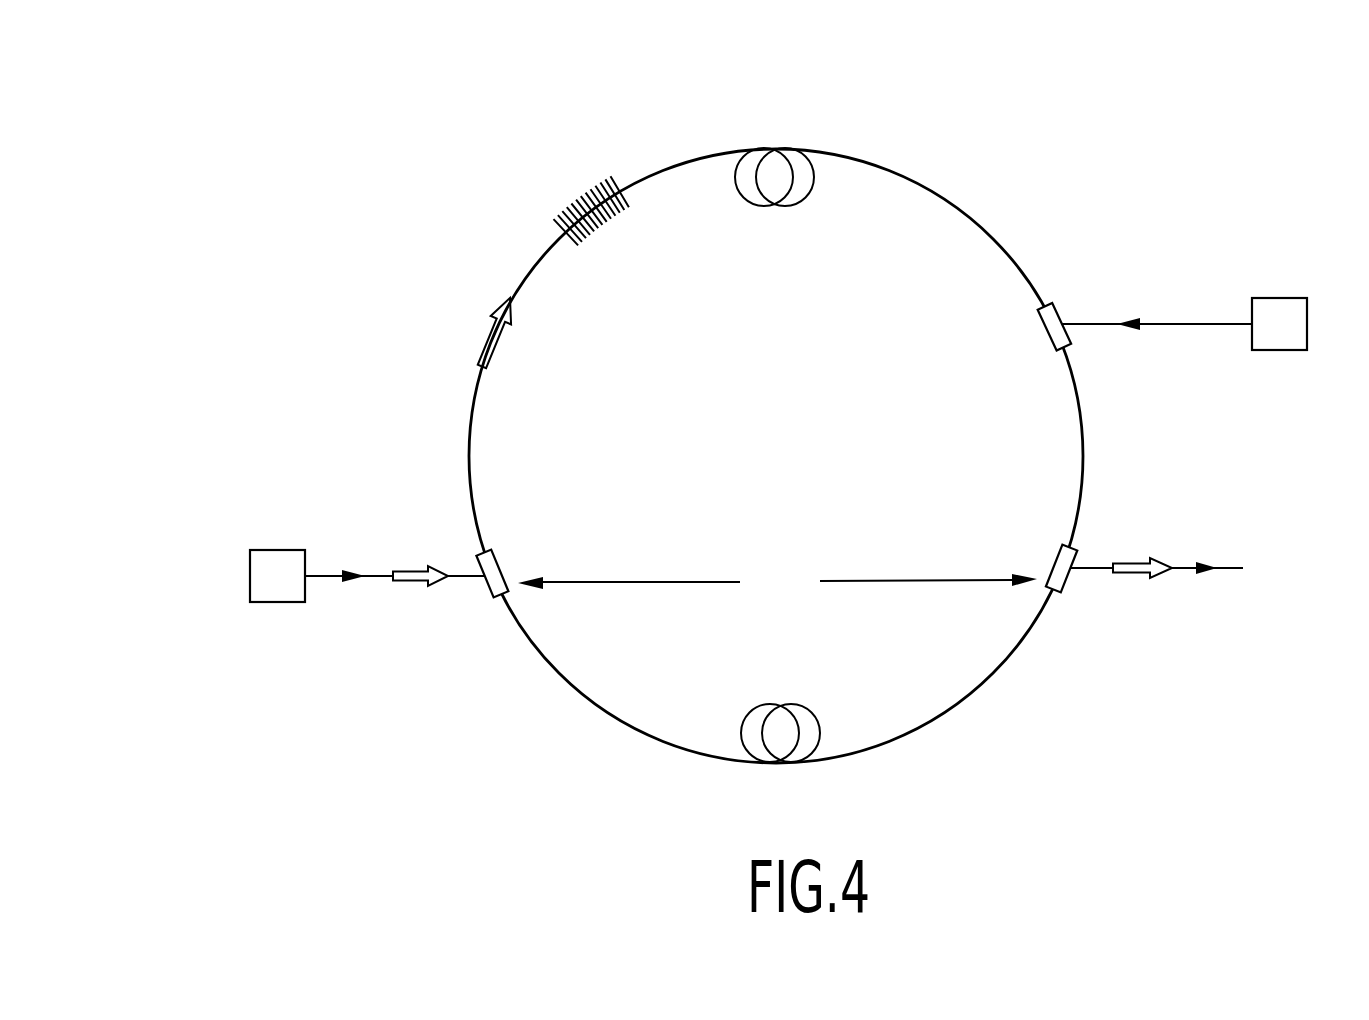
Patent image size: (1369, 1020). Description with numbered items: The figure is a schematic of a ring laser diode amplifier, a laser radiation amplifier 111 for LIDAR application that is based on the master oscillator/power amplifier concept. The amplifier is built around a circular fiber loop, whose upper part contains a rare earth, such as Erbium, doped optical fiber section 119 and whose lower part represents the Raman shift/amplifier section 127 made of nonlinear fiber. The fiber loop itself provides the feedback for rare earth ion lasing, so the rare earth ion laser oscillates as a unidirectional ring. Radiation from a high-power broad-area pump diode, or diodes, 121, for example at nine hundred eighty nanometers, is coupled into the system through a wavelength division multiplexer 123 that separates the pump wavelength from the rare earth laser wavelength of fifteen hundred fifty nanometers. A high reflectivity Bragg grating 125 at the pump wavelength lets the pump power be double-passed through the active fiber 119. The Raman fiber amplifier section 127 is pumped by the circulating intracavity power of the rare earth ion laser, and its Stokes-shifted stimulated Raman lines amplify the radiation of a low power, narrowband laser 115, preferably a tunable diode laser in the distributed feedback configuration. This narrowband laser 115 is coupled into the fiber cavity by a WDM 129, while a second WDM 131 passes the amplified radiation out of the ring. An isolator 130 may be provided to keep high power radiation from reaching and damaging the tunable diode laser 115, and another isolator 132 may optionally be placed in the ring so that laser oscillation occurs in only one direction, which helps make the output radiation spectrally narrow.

The laser radiation amplifier 111 is at (1152, 102).
The narrowband laser 115 is at (285, 602).
The rare earth doped optical fiber section 119 is at (942, 192).
The pump diode 121 is at (1283, 350).
The wavelength division multiplexer 123 is at (1064, 310).
The Bragg grating 125 is at (612, 178).
The Raman shift/amplifier section 127 is at (917, 732).
The 1651/1550 nm WDM 129 is at (505, 552).
The isolator 130 is at (490, 330).
The second 1651 nm WDM 131 is at (1052, 552).
The isolator 132 is at (413, 570).